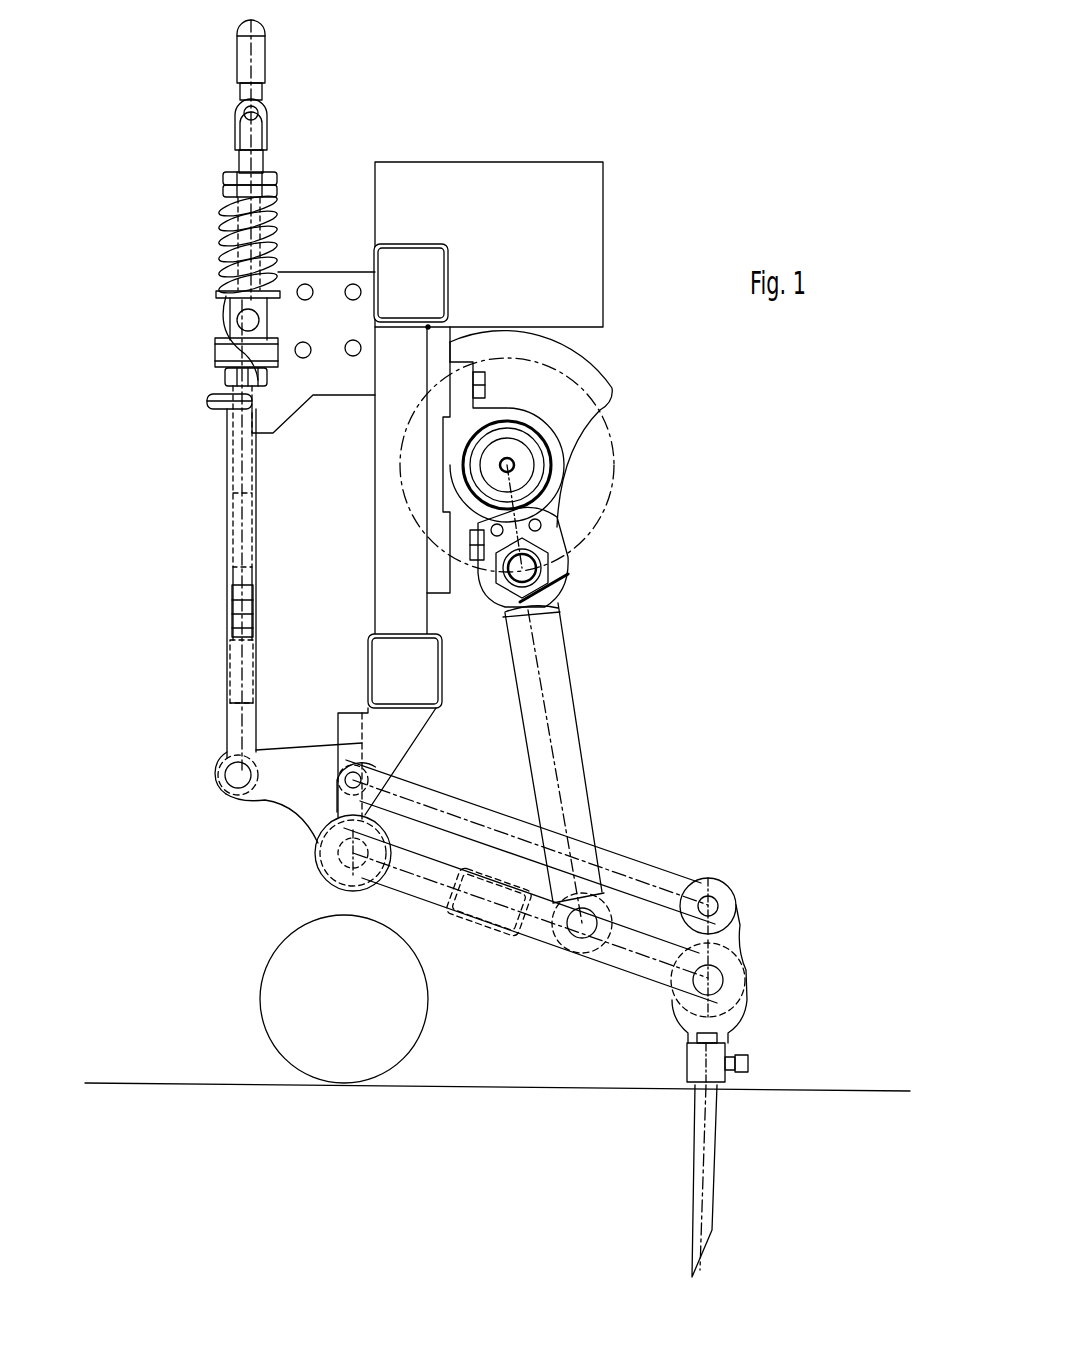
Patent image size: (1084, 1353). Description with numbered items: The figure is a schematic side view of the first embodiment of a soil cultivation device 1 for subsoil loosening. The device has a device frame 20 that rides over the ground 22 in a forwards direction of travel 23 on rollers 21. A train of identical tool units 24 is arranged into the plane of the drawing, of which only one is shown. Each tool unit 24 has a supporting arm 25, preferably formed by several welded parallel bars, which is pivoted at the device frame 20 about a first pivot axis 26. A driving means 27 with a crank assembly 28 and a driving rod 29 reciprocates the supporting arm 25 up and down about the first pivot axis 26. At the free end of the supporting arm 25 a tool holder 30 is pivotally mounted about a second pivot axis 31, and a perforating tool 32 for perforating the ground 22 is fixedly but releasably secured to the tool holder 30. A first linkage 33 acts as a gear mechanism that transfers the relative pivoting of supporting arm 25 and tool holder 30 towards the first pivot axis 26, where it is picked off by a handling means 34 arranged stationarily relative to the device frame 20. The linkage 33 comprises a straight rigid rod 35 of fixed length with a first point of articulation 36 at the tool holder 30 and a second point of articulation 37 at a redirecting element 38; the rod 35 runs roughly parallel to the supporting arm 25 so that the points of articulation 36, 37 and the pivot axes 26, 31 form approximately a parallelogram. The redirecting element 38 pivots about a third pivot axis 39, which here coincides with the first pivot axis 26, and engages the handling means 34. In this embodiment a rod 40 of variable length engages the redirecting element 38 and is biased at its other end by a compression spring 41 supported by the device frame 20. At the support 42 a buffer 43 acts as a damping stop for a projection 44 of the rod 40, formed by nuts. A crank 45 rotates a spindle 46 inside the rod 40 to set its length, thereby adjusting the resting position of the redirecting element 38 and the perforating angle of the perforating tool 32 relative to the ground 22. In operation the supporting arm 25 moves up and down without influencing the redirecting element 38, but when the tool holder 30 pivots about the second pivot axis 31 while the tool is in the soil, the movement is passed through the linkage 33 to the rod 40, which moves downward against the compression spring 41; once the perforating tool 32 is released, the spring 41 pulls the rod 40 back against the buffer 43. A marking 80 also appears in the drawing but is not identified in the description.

The soil cultivation device 1 is at (657, 93).
The device frame 20 is at (377, 565).
The rollers 21 is at (419, 1011).
The ground 22 is at (563, 1100).
The forwards direction of travel 23 is at (690, 683).
The tool unit 24 is at (645, 841).
The supporting arm 25 is at (627, 973).
The first pivot axis 26 is at (333, 870).
The driving means 27 is at (655, 550).
The crank assembly 28 is at (596, 443).
The driving rod 29 is at (563, 714).
The tool holder 30 is at (734, 940).
The second pivot axis 31 is at (710, 979).
The perforating tool 32 is at (712, 1138).
The first linkage 33 is at (672, 868).
The handling means 34 is at (186, 547).
The straight rigid rod 35 is at (455, 803).
The first point of articulation 36 is at (738, 898).
The second point of articulation 37 is at (368, 748).
The redirecting element 38 is at (285, 803).
The third pivot axis 39 is at (350, 880).
The rod of variable length 40 is at (228, 716).
The compression spring 41 is at (216, 240).
The support 42 is at (305, 283).
The buffer 43 is at (216, 362).
The projection 44 is at (221, 376).
The crank 45 is at (283, 110).
The spindle 46 is at (236, 618).
The reference plane 80 is at (678, 913).